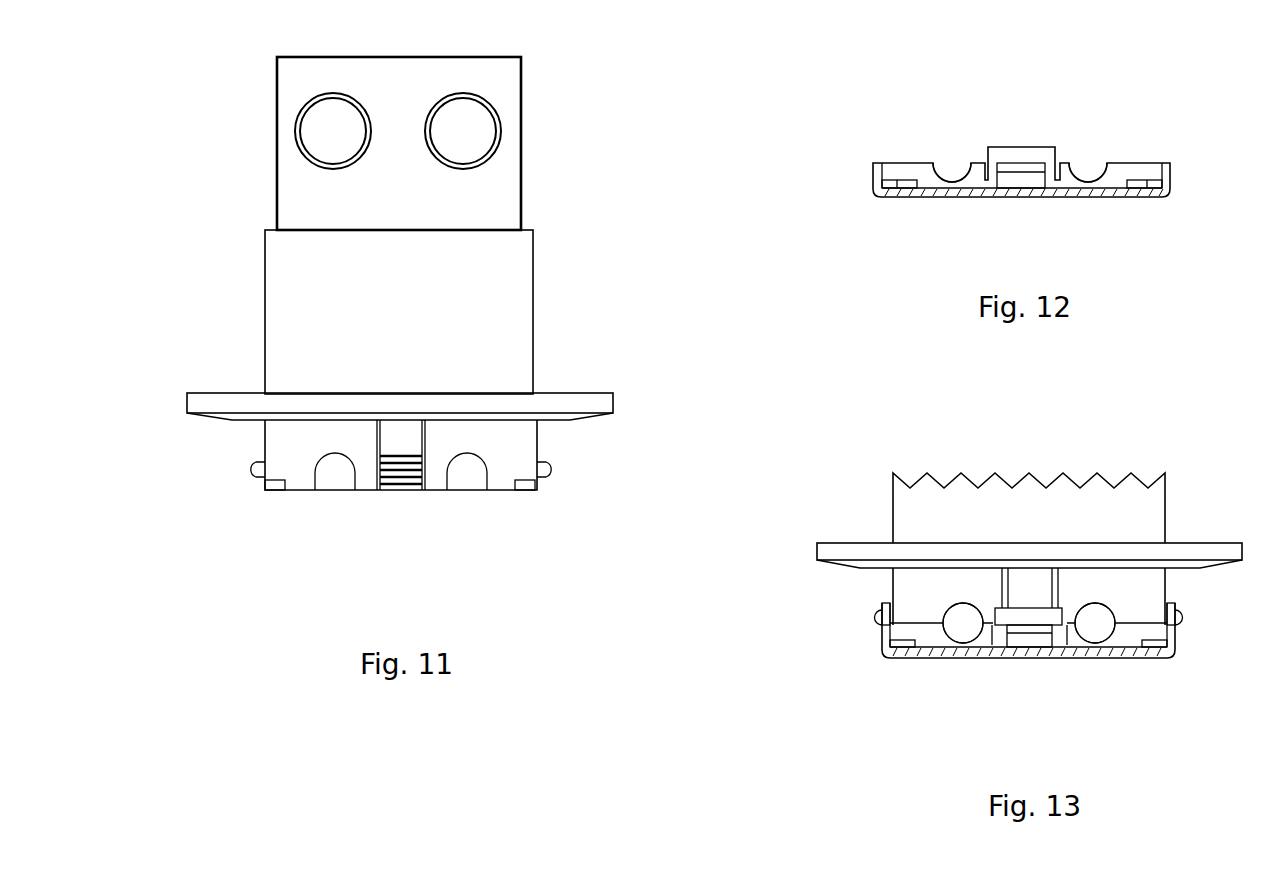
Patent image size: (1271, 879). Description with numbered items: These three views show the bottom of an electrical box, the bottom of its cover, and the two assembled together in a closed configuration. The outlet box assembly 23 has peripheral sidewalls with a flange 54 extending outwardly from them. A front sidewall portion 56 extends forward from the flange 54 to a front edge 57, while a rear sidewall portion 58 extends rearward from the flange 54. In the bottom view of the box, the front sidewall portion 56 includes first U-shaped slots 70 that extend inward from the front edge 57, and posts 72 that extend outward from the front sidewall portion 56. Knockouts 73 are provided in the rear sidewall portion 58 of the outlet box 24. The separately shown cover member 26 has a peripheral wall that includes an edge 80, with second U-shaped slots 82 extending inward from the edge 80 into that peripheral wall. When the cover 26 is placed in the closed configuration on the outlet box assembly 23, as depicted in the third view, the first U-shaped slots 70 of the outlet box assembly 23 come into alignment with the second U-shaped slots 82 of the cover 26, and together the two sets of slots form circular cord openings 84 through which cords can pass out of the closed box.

In FIG. 13, the outlet box assembly 23 is at (858, 503).
In FIG. 11, the outlet box 24 is at (594, 238).
In FIG. 12, the outlet box 24 is at (1138, 172).
In FIG. 12, the cover member 26 is at (880, 136).
In FIG. 13, the cover member 26 is at (1159, 659).
In FIG. 11, the flange 54 is at (614, 403).
In FIG. 11, the front sidewall portion 56 is at (309, 456).
In FIG. 11, the front edge 57 is at (302, 491).
In FIG. 11, the rear sidewall portion 58 is at (413, 323).
In FIG. 11, the first U-shaped slots 70 is at (335, 478).
In FIG. 13, the first U-shaped slots 70 is at (963, 600).
In FIG. 11, the posts 72 is at (246, 470).
In FIG. 11, the knockouts 73 is at (347, 142).
In FIG. 12, the edge 80 is at (905, 162).
In FIG. 12, the second U-shaped slots 82 is at (955, 168).
In FIG. 13, the second U-shaped slots 82 is at (958, 652).
In FIG. 13, the circular cord openings 84 is at (962, 628).